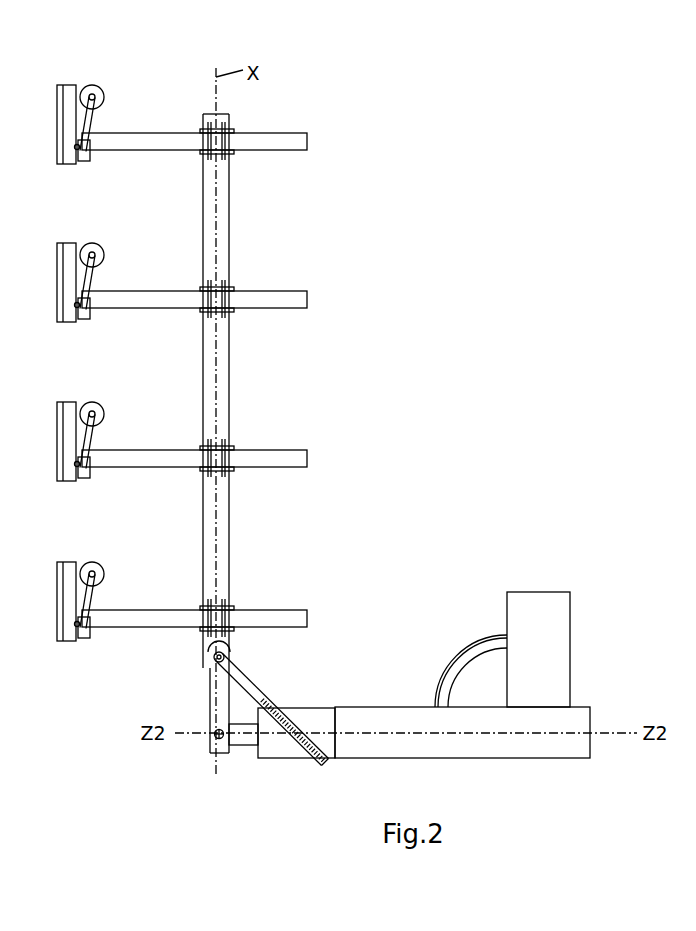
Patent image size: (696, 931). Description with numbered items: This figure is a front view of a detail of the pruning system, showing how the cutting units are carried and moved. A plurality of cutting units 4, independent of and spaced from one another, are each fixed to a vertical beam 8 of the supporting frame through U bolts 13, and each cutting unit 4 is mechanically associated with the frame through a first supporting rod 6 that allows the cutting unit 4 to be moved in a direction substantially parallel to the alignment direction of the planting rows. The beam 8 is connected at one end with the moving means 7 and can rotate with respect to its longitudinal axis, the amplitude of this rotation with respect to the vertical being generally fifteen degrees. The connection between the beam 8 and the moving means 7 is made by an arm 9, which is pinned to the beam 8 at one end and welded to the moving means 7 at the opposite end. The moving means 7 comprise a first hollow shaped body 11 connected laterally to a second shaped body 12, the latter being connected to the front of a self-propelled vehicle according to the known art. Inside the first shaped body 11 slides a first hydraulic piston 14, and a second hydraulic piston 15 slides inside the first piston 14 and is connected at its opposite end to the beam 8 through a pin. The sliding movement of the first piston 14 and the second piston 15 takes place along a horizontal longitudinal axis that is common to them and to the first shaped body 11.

The cutting unit 4 is at (62, 85).
The first supporting rod 6 is at (151, 133).
The moving means 7 is at (405, 643).
The beam 8 is at (229, 228).
The arm 9 is at (262, 685).
The first hollow shaped body 11 is at (397, 706).
The second shaped body 12 is at (507, 615).
The U bolt 13 is at (241, 123).
The first hydraulic piston 14 is at (315, 708).
The second hydraulic piston 15 is at (245, 746).